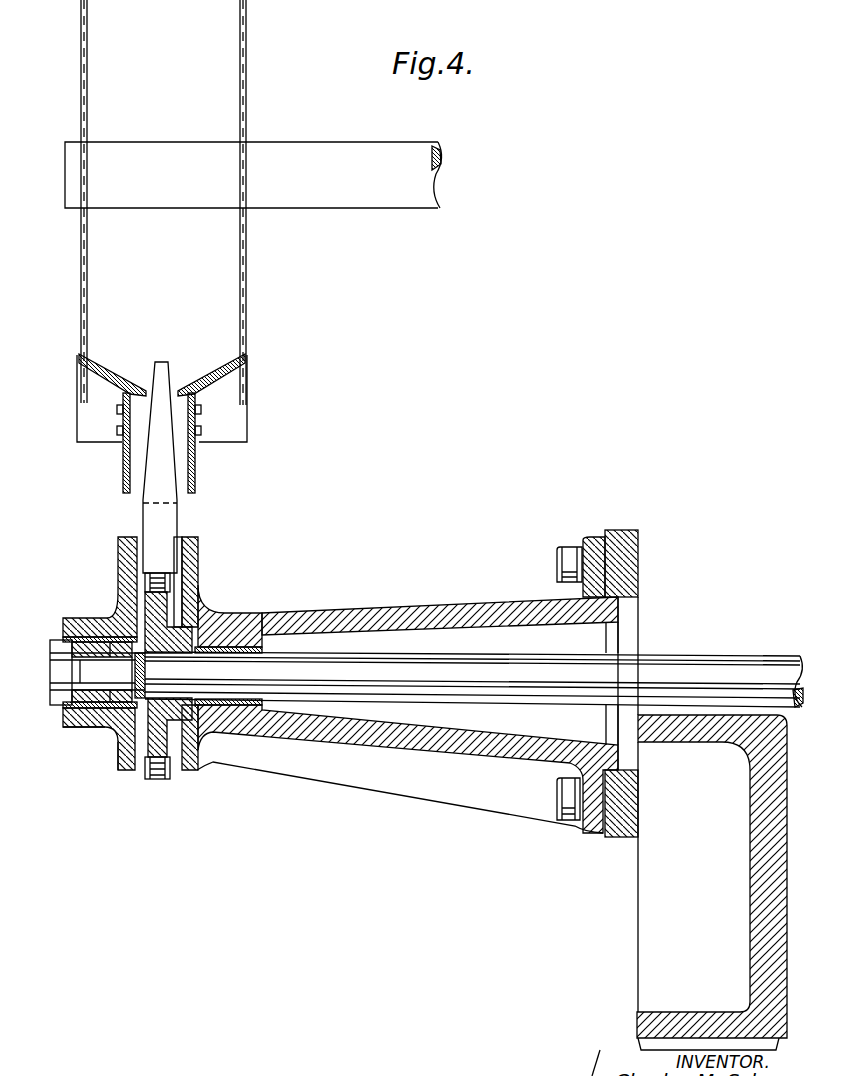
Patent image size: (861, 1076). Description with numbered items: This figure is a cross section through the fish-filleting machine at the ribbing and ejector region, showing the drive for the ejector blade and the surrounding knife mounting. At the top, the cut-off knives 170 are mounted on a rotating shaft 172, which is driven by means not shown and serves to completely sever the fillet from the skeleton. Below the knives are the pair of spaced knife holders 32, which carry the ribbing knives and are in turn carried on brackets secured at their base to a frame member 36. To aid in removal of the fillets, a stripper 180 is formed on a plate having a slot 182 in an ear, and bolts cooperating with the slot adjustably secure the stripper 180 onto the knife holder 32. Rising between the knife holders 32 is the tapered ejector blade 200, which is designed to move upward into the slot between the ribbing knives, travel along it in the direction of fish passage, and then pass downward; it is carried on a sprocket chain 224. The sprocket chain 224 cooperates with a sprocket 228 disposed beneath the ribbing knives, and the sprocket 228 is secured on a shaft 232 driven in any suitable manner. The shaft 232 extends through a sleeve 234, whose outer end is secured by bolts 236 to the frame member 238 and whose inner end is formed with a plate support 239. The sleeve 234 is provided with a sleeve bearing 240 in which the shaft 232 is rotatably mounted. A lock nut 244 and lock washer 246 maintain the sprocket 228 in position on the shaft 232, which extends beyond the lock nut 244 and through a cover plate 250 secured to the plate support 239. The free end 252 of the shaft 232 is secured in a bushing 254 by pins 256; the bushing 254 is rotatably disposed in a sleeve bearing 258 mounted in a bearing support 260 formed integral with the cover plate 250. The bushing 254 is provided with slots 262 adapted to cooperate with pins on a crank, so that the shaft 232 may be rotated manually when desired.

The cut-off knives 170 is at (240, 60).
The rotating shaft 172 is at (151, 150).
The stripper 180 is at (77, 418).
The slot 182 is at (117, 418).
The knife holders 32 is at (123, 465).
The ejector blade 200 is at (165, 463).
The plate support 239 is at (186, 560).
The sprocket chain 224 is at (172, 580).
The sprocket 228 is at (166, 605).
The sleeve bearing 240 is at (233, 646).
The pins 256 is at (110, 618).
The free end 252 is at (78, 625).
The slots 262 is at (55, 690).
The sleeve bearing 258 is at (62, 708).
The bushing 254 is at (86, 712).
The lock nut 244 is at (90, 728).
The bearing support 260 is at (92, 732).
The cover plate 250 is at (120, 758).
The lock washer 246 is at (144, 760).
The sleeve 234 is at (410, 605).
The shaft 232 is at (685, 665).
The bolts 236 is at (560, 562).
The frame member 238 is at (636, 572).
The frame member 36 is at (783, 899).